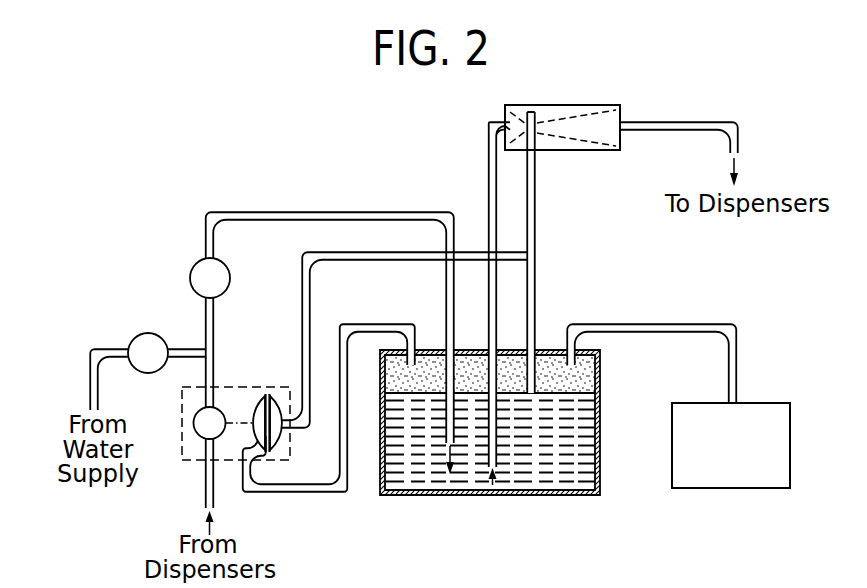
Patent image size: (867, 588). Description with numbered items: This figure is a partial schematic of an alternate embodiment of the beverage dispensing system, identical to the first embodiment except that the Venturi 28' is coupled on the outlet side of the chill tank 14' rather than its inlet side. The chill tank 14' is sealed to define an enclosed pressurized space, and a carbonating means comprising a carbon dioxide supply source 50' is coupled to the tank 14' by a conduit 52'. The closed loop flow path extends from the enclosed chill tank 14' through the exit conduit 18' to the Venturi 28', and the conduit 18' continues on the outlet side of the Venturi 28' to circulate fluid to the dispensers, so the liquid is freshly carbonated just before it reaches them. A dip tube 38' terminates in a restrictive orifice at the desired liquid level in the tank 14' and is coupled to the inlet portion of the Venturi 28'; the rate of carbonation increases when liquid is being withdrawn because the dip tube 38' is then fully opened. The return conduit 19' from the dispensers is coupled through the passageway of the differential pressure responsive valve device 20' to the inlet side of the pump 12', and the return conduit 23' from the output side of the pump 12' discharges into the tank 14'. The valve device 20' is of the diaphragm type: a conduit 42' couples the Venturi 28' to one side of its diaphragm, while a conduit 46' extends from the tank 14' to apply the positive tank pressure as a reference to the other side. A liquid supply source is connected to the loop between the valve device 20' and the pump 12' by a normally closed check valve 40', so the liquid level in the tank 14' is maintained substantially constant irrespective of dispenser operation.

The pump 12' is at (191, 261).
The chill tank 14' is at (532, 422).
The exit conduit 18' is at (586, 281).
The return conduit 19' is at (187, 406).
The differential pressure responsive valve device 20' is at (236, 394).
The return conduit 23' is at (330, 318).
The Venturi 28' is at (562, 100).
The dip tube 38' is at (575, 252).
The check valve 40' is at (136, 335).
The conduit 42' is at (404, 340).
The conduit 46' is at (329, 433).
The carbon dioxide supply source 50' is at (740, 415).
The conduit 52' is at (651, 343).